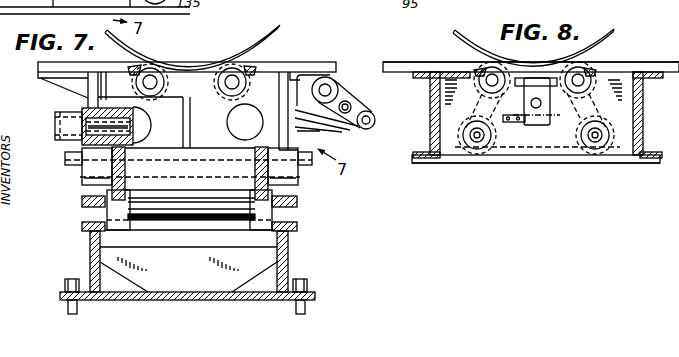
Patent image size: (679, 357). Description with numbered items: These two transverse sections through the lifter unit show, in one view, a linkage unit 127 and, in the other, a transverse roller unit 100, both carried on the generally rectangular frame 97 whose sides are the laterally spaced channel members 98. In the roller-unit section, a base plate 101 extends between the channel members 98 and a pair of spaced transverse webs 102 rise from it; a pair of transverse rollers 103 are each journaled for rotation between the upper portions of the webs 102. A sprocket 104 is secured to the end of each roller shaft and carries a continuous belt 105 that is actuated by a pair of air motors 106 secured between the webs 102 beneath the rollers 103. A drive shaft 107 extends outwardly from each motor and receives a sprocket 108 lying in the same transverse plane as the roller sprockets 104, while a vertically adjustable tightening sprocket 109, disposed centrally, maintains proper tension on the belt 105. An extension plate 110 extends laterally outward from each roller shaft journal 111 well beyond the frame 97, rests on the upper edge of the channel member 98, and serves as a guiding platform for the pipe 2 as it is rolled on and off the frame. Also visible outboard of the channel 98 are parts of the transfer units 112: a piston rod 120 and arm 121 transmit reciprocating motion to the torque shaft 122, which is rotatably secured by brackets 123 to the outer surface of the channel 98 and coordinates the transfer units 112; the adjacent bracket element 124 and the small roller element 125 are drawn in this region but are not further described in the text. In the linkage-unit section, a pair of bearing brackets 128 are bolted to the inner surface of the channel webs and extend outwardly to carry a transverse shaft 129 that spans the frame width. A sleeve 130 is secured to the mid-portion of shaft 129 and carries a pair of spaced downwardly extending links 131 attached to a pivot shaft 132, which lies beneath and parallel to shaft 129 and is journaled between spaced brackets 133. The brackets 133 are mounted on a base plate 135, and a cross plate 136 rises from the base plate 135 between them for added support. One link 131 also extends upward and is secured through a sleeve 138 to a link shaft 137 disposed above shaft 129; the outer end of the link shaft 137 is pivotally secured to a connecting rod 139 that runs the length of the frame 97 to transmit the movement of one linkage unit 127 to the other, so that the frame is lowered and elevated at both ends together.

In FIG. 7, the pipe 2 is at (274, 31).
In FIG. 8, the pipe 2 is at (472, 24).
In FIG. 7, the frame 97 is at (62, 96).
In FIG. 8, the frame 97 is at (415, 161).
In FIG. 7, the channel members 98 is at (88, 92).
In FIG. 8, the channel members 98 is at (430, 121).
In FIG. 8, the transverse roller units 100 is at (404, 60).
In FIG. 8, the base plate 101 is at (541, 156).
In FIG. 7, the transverse webs 102 is at (188, 80).
In FIG. 8, the transverse webs 102 is at (553, 137).
In FIG. 7, the transverse rollers 103 is at (152, 67).
In FIG. 8, the transverse rollers 103 is at (549, 71).
In FIG. 8, the sprocket 104 is at (477, 71).
In FIG. 8, the continuous belt 105 is at (515, 142).
In FIG. 7, the air motors 106 is at (147, 118).
In FIG. 8, the air motors 106 is at (475, 158).
In FIG. 8, the drive shaft 107 is at (476, 138).
In FIG. 8, the sprocket 108 is at (492, 136).
In FIG. 8, the tightening sprocket 109 is at (551, 116).
In FIG. 7, the extension plate 110 is at (38, 66).
In FIG. 8, the extension plate 110 is at (420, 62).
In FIG. 7, the roller shaft journal 111 is at (132, 67).
In FIG. 7, the transfer units 112 is at (333, 132).
In FIG. 7, the piston rod 120 is at (360, 128).
In FIG. 7, the arm 121 is at (379, 104).
In FIG. 7, the torque shaft 122 is at (331, 86).
In FIG. 7, the brackets 123 is at (298, 78).
In FIG. 7, the bracket 124 is at (297, 98).
In FIG. 7, the small roller 125 is at (351, 104).
In FIG. 7, the linkage unit 127 is at (306, 225).
In FIG. 7, the bearing brackets 128 is at (82, 178).
In FIG. 7, the transverse shaft 129 is at (208, 183).
In FIG. 7, the sleeve 130 is at (222, 200).
In FIG. 7, the links 131 is at (126, 180).
In FIG. 7, the pivot shaft 132 is at (193, 226).
In FIG. 7, the brackets 133 is at (88, 243).
In FIG. 7, the base plate 135 is at (176, 290).
In FIG. 7, the cross plate 136 is at (265, 262).
In FIG. 7, the link shaft 137 is at (88, 123).
In FIG. 7, the sleeve 138 is at (112, 106).
In FIG. 7, the connecting rod 139 is at (68, 140).